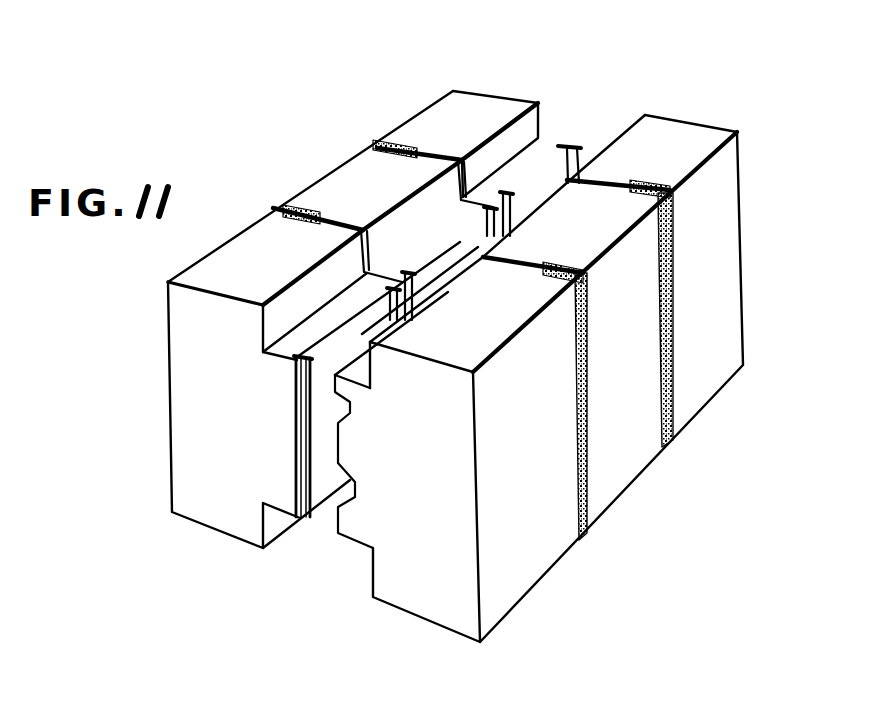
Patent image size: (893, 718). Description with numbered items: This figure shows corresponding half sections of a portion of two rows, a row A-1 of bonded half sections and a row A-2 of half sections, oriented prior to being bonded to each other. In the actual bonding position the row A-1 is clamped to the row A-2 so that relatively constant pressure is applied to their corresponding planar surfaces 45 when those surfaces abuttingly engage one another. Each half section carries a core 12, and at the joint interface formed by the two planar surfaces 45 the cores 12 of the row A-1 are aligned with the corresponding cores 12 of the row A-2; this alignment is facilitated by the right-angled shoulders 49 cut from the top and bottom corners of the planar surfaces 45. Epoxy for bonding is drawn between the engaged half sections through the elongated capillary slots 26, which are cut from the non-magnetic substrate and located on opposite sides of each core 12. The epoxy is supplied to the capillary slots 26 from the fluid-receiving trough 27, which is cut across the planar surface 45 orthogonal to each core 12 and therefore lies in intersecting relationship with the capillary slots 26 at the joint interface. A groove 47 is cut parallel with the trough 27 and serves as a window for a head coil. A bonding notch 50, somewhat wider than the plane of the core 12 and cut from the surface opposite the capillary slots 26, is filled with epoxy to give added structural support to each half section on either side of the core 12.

The core 12 is at (440, 153).
The capillary slot 26 is at (580, 143).
The fluid-receiving trough 27 is at (350, 492).
The planar surface 45 is at (316, 375).
The groove 47 is at (346, 408).
The right-angled shoulder 49 is at (528, 125).
The bonding notch 50 is at (283, 207).
The row of bonded half sections A-1 is at (693, 118).
The row of half sections A-2 is at (488, 92).